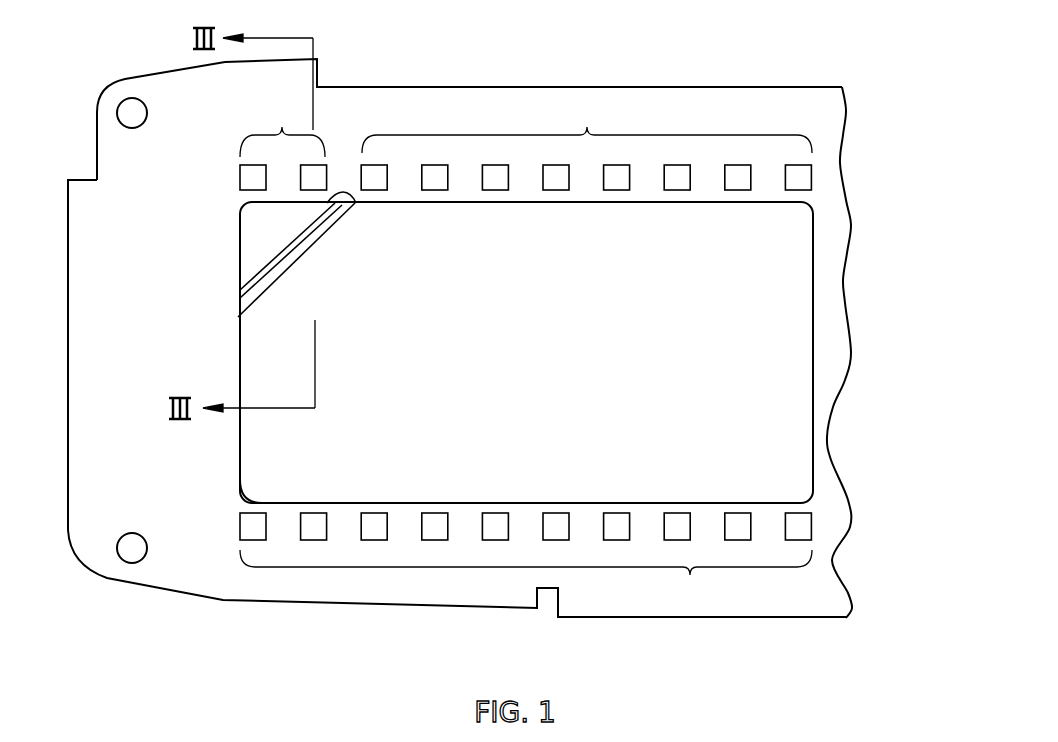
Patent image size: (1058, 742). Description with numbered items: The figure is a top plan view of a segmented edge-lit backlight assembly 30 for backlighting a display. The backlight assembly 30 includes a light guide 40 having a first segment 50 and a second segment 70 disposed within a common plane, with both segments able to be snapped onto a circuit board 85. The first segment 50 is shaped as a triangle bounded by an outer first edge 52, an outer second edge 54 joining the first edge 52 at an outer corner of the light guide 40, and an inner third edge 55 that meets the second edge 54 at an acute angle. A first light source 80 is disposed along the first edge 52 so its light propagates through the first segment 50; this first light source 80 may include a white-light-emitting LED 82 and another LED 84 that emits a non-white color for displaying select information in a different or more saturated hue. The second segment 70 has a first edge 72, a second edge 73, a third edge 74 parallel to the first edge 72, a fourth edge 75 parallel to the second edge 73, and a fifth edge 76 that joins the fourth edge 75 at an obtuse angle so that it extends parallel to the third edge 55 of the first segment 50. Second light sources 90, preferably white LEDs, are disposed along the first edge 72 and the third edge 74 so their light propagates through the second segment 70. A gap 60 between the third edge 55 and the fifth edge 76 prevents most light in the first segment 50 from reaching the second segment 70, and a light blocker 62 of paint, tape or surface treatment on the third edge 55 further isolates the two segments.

The edge-lit backlight assembly 30 is at (712, 116).
The light guide 40 is at (813, 378).
The first segment 50 is at (294, 254).
The first edge 52 is at (352, 199).
The second edge 54 is at (238, 262).
The third edge 55 is at (263, 280).
The gap 60 is at (226, 318).
The light blocker 62 is at (288, 245).
The second segment 70 is at (268, 448).
The first edge 72 is at (768, 201).
The second edge 73 is at (812, 280).
The third edge 74 is at (768, 503).
The fourth edge 75 is at (240, 430).
The fifth edge 76 is at (313, 240).
The first light source 80 is at (264, 122).
The white-light-emitting LED 82 is at (250, 175).
The non-white LED 84 is at (327, 177).
The circuit board 85 is at (840, 112).
The second light source 90 is at (526, 353).